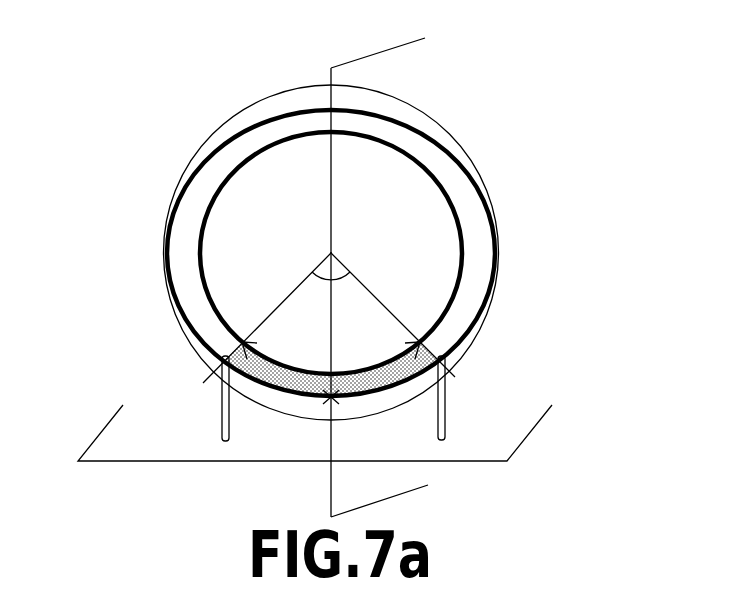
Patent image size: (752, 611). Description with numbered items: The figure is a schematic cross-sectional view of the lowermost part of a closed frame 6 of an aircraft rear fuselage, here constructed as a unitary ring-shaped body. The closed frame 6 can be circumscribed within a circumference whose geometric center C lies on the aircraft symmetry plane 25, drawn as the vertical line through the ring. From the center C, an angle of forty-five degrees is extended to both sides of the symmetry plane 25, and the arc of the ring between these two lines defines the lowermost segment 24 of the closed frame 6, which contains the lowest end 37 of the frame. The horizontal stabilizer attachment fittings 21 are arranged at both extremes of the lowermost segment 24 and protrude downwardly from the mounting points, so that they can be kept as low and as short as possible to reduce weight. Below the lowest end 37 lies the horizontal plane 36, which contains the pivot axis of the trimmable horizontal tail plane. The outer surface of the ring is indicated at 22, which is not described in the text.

The closed frame 6 is at (281, 230).
The outer surface of ring 22 is at (180, 325).
The aircraft symmetry plane 25 is at (331, 85).
The geometric center C is at (331, 253).
The lowermost segment 24 is at (222, 362).
The lowest end 37 is at (340, 402).
The horizontal stabilizer attachment fittings 21 is at (230, 423).
The horizontal plane 36 is at (532, 432).